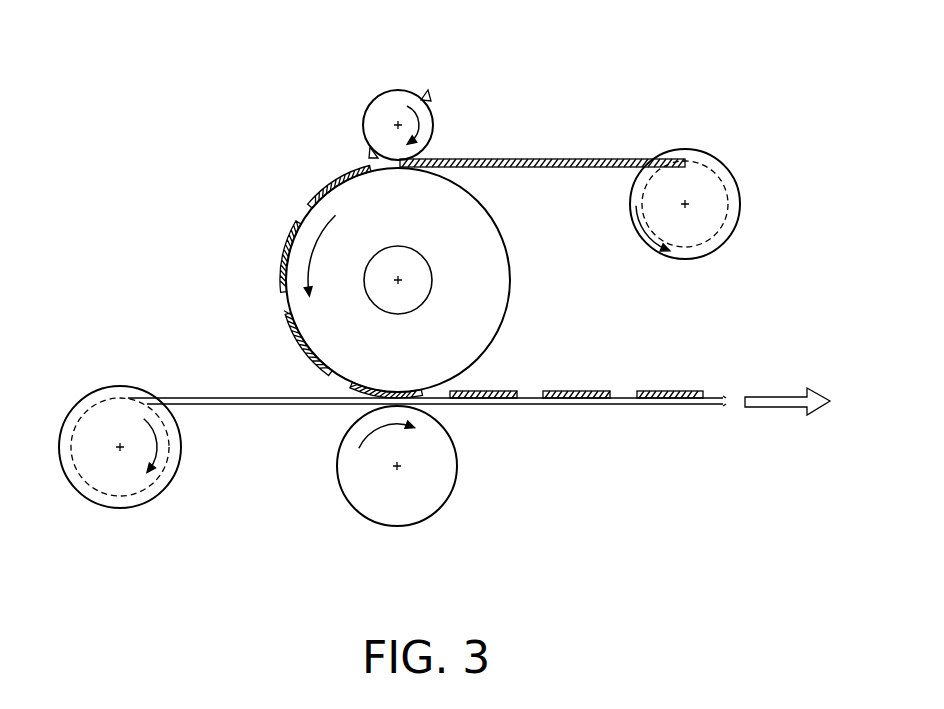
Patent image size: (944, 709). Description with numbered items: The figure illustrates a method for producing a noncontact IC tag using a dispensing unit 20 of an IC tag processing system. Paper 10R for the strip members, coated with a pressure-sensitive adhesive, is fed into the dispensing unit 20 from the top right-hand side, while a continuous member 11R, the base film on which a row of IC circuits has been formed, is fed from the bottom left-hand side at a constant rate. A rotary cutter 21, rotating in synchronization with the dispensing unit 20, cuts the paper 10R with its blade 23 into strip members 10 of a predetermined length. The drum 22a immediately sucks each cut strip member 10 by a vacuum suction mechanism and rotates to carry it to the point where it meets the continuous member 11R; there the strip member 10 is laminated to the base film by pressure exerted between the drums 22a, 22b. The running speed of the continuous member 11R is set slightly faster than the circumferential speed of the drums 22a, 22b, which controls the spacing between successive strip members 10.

The strip member 10 is at (319, 192).
The paper for the strip members 10R is at (590, 159).
The continuous member 11R is at (254, 405).
The dispensing unit 20 is at (441, 378).
The rotary cutter 21 is at (372, 113).
The drum 22a is at (510, 266).
The drum 22b is at (442, 466).
The blade 23 is at (424, 97).